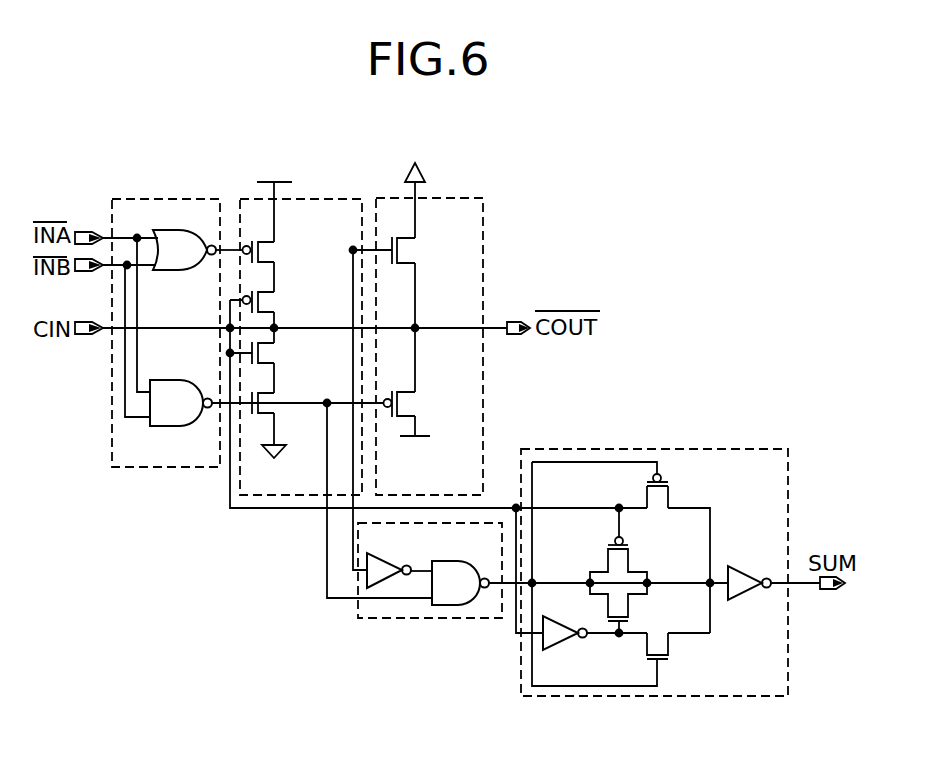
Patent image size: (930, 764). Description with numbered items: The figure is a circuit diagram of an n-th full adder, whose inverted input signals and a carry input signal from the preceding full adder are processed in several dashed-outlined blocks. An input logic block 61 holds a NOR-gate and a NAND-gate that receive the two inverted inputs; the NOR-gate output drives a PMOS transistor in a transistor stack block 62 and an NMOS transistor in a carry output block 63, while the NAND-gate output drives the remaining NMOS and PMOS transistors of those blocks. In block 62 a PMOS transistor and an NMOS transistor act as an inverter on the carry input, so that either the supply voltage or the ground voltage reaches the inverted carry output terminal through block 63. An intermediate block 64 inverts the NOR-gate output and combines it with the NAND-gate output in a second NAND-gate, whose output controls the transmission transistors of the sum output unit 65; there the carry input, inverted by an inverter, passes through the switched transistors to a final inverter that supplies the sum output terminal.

The input logic block (NOR21, ND21) 61 is at (151, 199).
The carry transistor stack block (PM21, PM22, NM21, NM22) 62 is at (310, 199).
The carry output driver block (NM23, PM23) 63 is at (452, 198).
The inverter/NAND block (I21, ND22) 64 is at (393, 619).
The sum output unit 65 is at (678, 449).